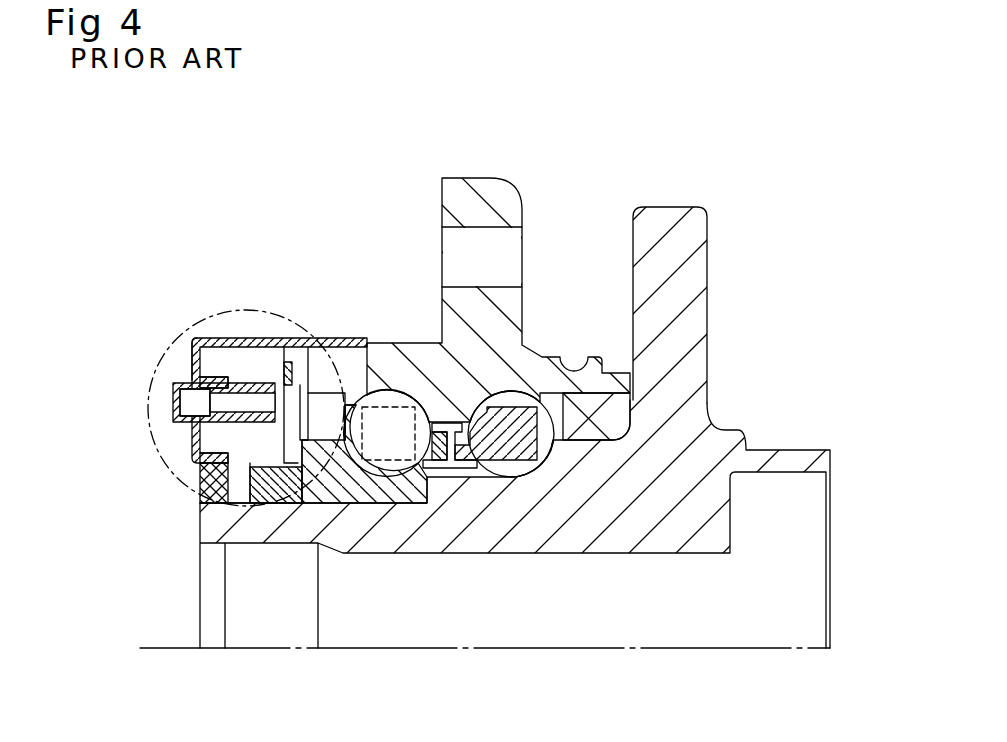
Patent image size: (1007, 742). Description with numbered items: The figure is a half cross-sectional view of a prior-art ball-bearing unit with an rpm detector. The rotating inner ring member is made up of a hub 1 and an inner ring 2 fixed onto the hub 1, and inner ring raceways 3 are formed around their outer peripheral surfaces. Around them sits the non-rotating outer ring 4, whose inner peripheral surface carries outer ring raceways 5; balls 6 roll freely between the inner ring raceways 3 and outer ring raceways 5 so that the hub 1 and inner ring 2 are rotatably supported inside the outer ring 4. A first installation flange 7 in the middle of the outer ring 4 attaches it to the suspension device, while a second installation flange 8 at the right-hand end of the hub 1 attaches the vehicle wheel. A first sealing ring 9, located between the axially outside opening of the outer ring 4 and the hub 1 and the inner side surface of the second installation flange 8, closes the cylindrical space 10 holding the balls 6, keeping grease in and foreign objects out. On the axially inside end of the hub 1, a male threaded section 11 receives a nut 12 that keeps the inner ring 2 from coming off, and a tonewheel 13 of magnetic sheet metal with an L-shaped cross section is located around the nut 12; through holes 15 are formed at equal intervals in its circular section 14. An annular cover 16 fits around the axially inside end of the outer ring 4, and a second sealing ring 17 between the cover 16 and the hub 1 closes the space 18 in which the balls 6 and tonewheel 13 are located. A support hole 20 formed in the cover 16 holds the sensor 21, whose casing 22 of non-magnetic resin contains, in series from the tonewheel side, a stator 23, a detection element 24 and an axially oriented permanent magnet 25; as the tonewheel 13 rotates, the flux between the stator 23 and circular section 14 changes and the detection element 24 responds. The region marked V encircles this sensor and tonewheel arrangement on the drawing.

The hub 1 is at (717, 493).
The inner ring 2 is at (395, 500).
The inner ring raceways 3 is at (392, 478).
The outer ring 4 is at (440, 330).
The outer ring raceways 5 is at (392, 390).
The balls 6 is at (497, 397).
The first installation flange 7 is at (512, 195).
The second installation flange 8 is at (697, 270).
The first sealing ring 9 is at (618, 402).
The cylindrical space 10 is at (478, 480).
The male threaded section 11 is at (292, 500).
The nut 12 is at (272, 492).
The tonewheel 13 is at (283, 355).
The circular section 14 is at (312, 400).
The through holes 15 is at (295, 370).
The cover 16 is at (280, 370).
The second sealing ring 17 is at (208, 480).
The space 18 is at (332, 478).
The support hole 20 is at (190, 375).
The sensor 21 is at (230, 507).
The casing 22 is at (213, 355).
The stator 23 is at (255, 388).
The detection element 24 is at (195, 445).
The permanent magnet 25 is at (177, 400).
The view circle V is at (128, 360).